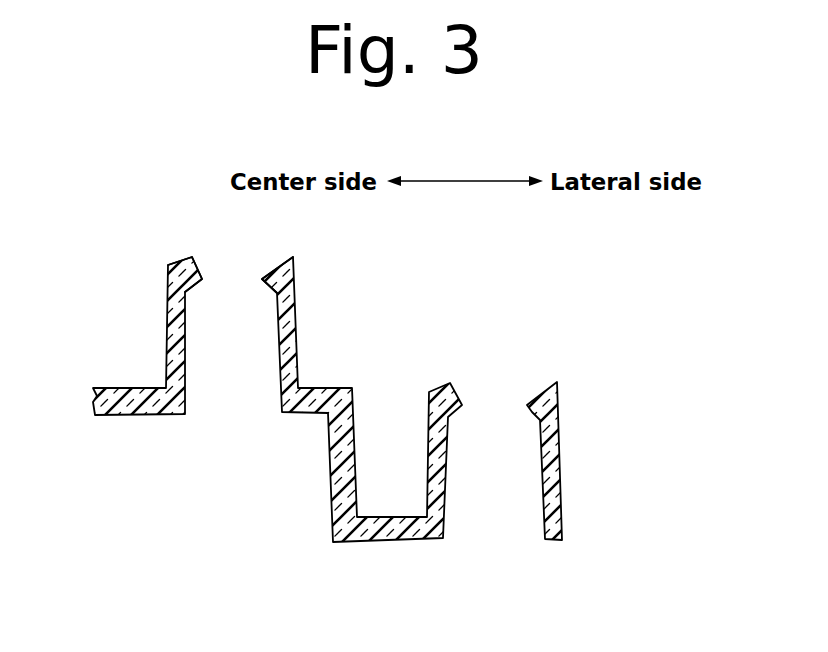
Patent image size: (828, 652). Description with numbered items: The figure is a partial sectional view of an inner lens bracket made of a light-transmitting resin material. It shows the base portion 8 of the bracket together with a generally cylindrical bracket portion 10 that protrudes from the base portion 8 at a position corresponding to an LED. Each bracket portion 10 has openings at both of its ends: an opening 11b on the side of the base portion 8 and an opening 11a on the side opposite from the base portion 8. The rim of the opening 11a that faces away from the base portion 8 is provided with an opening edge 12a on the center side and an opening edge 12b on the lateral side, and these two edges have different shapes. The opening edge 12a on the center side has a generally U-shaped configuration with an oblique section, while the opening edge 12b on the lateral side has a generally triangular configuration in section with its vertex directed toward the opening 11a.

The base portion 8 is at (117, 414).
The bracket portion 10 is at (142, 322).
The opening 11a is at (228, 278).
The opening 11b is at (225, 405).
The opening edge 12a is at (187, 270).
The opening edge 12b is at (284, 282).